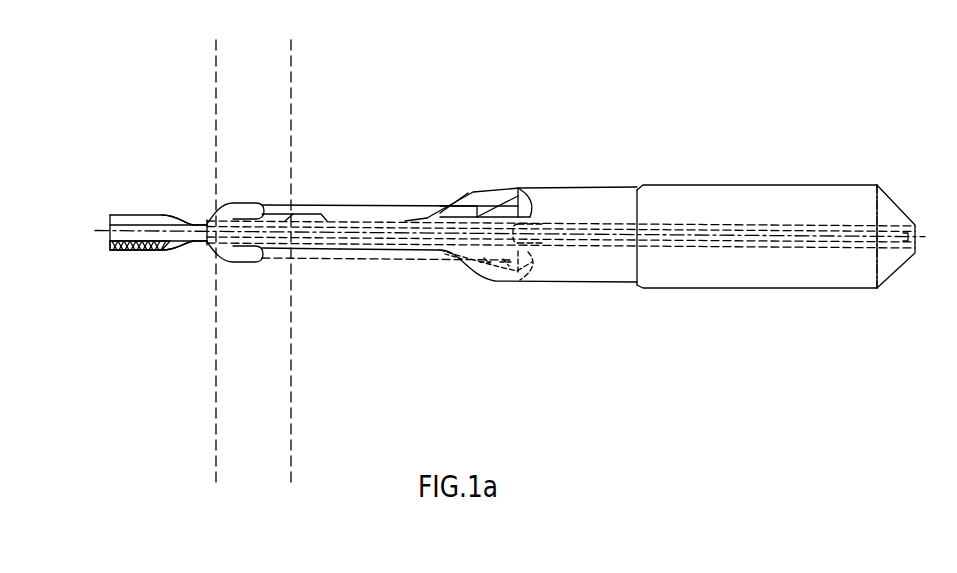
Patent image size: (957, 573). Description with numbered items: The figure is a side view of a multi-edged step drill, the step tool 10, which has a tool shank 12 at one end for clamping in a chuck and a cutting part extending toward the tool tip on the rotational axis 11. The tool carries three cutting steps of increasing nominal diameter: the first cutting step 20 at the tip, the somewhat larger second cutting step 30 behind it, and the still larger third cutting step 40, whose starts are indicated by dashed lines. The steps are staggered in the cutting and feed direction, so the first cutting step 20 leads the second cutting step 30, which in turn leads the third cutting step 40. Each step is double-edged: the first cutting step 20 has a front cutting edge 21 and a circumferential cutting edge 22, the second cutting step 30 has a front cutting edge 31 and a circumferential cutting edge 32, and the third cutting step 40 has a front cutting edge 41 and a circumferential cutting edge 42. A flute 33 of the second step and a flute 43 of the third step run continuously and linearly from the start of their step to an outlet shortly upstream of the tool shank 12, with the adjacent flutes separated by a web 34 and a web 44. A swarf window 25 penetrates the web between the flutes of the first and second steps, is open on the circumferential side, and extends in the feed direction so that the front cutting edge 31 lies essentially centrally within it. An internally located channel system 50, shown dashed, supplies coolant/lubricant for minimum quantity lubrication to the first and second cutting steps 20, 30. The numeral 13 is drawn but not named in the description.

The step tool 10 is at (604, 314).
The rotational axis 11 is at (820, 270).
The tool shank 12 is at (739, 298).
The cutting head 13 is at (411, 304).
The first cutting step 20 is at (143, 96).
The front cutting edge 21 is at (108, 252).
The circumferential cutting edge 22 is at (128, 252).
The swarf window 25 is at (183, 263).
The second cutting step 30 is at (247, 96).
The front cutting edge 31 is at (229, 263).
The circumferential cutting edge 32 is at (256, 264).
The flute 33 is at (300, 264).
The web 34 is at (341, 252).
The third cutting step 40 is at (353, 97).
The front cutting edge 41 is at (299, 216).
The circumferential cutting edge 42 is at (316, 216).
The flute 43 is at (370, 212).
The web 44 is at (412, 216).
The channel system 50 is at (553, 248).